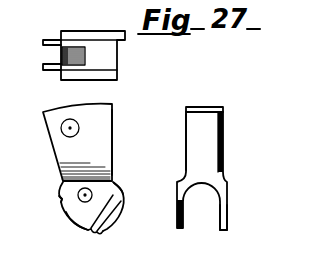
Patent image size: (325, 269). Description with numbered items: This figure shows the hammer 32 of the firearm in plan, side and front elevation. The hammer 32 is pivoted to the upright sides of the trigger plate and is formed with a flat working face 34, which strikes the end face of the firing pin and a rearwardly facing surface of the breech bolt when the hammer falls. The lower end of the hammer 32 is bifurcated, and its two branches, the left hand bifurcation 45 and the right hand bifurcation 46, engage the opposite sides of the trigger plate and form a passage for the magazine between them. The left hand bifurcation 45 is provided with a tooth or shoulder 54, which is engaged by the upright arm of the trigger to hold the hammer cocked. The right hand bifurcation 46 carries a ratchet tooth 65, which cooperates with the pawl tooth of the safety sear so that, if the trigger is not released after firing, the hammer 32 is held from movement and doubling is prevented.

The hammer 32 is at (102, 58).
The flat working face 34 is at (198, 130).
The left hand bifurcation 45 is at (123, 192).
The right hand bifurcation 46 is at (86, 226).
The tooth or shoulder 54 is at (100, 235).
The ratchet tooth 65 is at (61, 200).